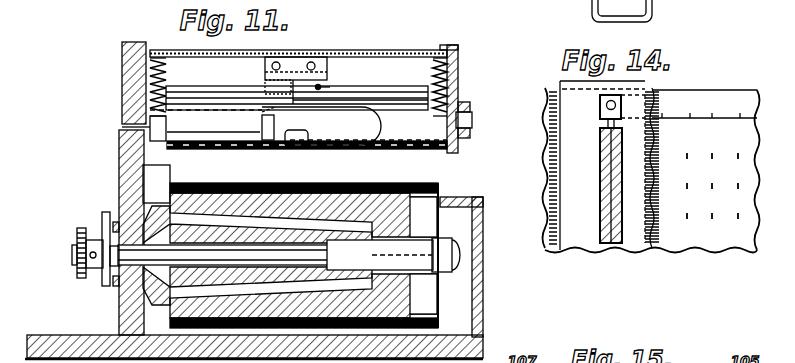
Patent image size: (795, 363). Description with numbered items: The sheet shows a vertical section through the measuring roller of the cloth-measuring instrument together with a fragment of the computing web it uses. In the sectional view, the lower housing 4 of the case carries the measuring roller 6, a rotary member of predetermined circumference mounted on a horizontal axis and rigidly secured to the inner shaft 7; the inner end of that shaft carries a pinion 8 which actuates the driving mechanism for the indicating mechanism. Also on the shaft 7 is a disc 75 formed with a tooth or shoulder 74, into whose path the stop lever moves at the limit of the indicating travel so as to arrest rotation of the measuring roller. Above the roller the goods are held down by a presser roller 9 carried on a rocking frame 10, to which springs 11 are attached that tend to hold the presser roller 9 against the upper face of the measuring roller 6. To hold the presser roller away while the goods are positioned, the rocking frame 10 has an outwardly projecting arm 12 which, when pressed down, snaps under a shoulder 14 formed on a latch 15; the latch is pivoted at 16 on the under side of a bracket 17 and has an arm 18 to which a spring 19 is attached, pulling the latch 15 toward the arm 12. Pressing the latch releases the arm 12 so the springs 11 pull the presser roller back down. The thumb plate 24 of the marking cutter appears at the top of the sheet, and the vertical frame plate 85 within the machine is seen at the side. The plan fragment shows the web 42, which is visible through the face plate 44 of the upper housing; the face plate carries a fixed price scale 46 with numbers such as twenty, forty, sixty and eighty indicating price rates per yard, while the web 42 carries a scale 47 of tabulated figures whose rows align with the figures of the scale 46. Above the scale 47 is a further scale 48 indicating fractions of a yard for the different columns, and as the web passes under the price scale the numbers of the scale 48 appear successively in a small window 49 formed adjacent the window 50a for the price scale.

In FIG. 11, the lower housing 4 is at (484, 292).
In FIG. 11, the measuring roller 6 is at (403, 185).
In FIG. 11, the inner shaft 7 is at (289, 255).
In FIG. 11, the pinion 8 is at (82, 228).
In FIG. 11, the presser roller 9 is at (395, 152).
In FIG. 11, the rocking frame 10 is at (200, 119).
In FIG. 11, the springs 11 is at (160, 74).
In FIG. 11, the outwardly projecting arm 12 is at (290, 144).
In FIG. 11, the shoulder 14 is at (262, 118).
In FIG. 11, the latch 15 is at (354, 126).
In FIG. 11, the pivot 16 is at (268, 80).
In FIG. 11, the bracket 17 is at (296, 68).
In FIG. 11, the arm 18 is at (322, 87).
In FIG. 11, the spring 19 is at (318, 86).
In FIG. 14, the thumb plate 24 is at (592, 8).
In FIG. 14, the web 42 is at (552, 202).
In FIG. 14, the face plate 44 is at (572, 110).
In FIG. 14, the fixed price scale 46 is at (565, 170).
In FIG. 14, the scale 47 is at (678, 242).
In FIG. 14, the scale 48 is at (700, 118).
In FIG. 14, the small window 49 is at (598, 103).
In FIG. 14, the window 50a is at (598, 244).
In FIG. 11, the tooth or shoulder 74 is at (106, 212).
In FIG. 11, the disc 75 is at (106, 278).
In FIG. 11, the vertical frame plate 85 is at (124, 88).